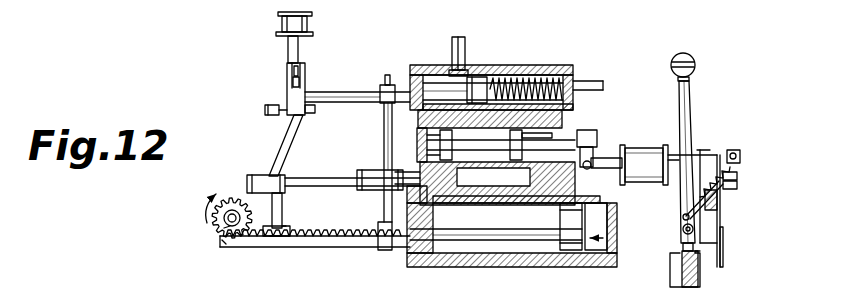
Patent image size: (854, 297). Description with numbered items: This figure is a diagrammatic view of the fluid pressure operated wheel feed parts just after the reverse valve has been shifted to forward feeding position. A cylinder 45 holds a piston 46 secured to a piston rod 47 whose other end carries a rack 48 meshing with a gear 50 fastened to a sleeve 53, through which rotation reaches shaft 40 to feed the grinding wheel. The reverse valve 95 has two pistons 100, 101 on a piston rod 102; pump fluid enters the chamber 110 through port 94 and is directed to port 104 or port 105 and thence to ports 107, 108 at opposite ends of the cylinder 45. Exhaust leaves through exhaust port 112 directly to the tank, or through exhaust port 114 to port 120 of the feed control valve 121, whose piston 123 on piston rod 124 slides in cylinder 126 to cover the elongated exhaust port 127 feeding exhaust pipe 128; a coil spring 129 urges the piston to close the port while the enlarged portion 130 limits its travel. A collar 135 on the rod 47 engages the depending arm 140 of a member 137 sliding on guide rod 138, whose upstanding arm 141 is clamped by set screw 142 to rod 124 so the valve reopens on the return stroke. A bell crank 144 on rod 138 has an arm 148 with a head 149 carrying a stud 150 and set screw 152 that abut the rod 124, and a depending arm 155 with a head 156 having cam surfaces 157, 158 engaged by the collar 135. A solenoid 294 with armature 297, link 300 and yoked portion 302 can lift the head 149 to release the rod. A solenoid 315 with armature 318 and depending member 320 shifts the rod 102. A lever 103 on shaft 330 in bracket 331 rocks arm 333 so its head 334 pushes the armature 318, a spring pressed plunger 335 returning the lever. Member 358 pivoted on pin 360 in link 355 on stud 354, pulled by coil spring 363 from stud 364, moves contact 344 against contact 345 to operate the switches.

The solenoid 294 is at (296, 22).
The armature 297 is at (299, 48).
The link 300 is at (293, 71).
The yoked portion 302 is at (292, 81).
The stud 150 is at (311, 96).
The head 149 is at (287, 93).
The set screw 152 is at (265, 110).
The arm 148 is at (289, 131).
The bell crank 144 is at (262, 177).
The shaft 40 is at (229, 199).
The gear 50 is at (222, 229).
The sleeve 53 is at (222, 241).
The depending arm 155 is at (282, 205).
The head 156 is at (285, 229).
The guide rod 138 is at (333, 187).
The depending arm 140 is at (386, 215).
The upstanding arm 141 is at (384, 122).
The member 137 is at (384, 148).
The set screw 142 is at (386, 76).
The cam surface 158 is at (272, 245).
The cam surface 157 is at (286, 245).
The rack 48 is at (324, 248).
The collar 135 is at (388, 251).
The port 120 is at (417, 78).
The enlarged portion 130 is at (455, 88).
The exhaust pipe 128 is at (459, 37).
The exhaust port 127 is at (463, 71).
The piston 123 is at (481, 80).
The feed control valve cylinder 126 is at (534, 66).
The coil spring 129 is at (537, 78).
The feed control valve 121 is at (551, 64).
The piston rod 124 is at (594, 81).
The exhaust port 114 is at (566, 116).
The exhaust port 112 is at (422, 123).
The piston rod 102 is at (427, 141).
The piston 100 is at (406, 170).
The port 104 is at (421, 186).
The port 94 is at (490, 130).
The chamber 110 is at (481, 147).
The piston 101 is at (516, 133).
The port 105 is at (526, 158).
The port 108 is at (440, 204).
The reverse valve 95 is at (580, 131).
The depending member 320 is at (599, 157).
The armature 318 is at (608, 166).
The solenoid 315 is at (649, 160).
The cylinder 45 is at (468, 262).
The piston rod 47 is at (523, 241).
The piston 46 is at (572, 251).
The port 107 is at (596, 226).
The lever 103 is at (692, 95).
The horizontally disposed member 358 is at (695, 148).
The head 334 is at (704, 150).
The pin 360 is at (736, 154).
The arm 333 is at (697, 194).
The link 355 is at (738, 174).
The stud 354 is at (738, 185).
The coil spring 363 is at (692, 208).
The stud 364 is at (684, 218).
The shaft 330 is at (683, 230).
The spring contact member 344 is at (721, 212).
The spring contact member 345 is at (724, 238).
The spring pressed plunger 335 is at (682, 246).
The bracket 331 is at (681, 275).